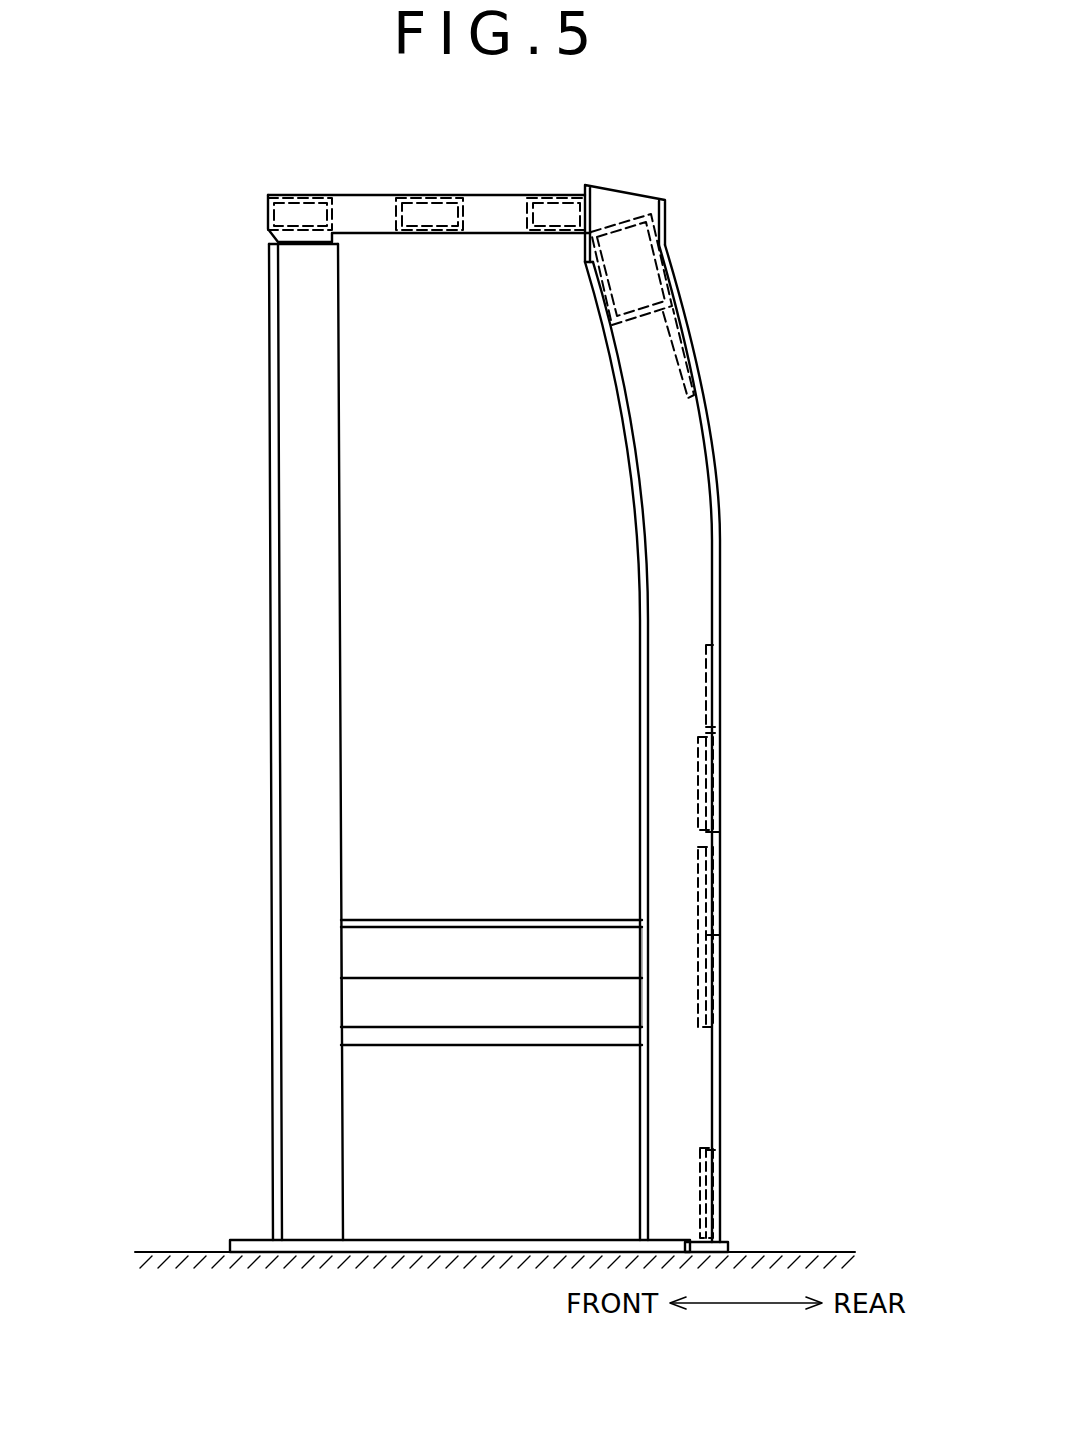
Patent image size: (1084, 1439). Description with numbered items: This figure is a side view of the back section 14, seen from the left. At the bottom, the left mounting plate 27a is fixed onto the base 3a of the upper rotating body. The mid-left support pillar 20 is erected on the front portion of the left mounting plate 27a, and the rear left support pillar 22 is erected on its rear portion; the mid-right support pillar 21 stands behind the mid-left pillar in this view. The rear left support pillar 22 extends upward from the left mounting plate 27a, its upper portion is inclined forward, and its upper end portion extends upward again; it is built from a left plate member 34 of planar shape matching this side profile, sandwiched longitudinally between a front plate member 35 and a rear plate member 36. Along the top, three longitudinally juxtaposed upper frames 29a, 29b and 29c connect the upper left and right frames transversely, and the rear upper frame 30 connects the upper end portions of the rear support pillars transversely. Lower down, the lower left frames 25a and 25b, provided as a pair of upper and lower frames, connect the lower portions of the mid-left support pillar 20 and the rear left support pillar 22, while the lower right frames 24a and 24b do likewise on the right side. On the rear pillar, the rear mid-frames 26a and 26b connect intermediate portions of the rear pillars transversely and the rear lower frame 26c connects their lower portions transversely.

The back section 14 is at (196, 248).
The upper frame 29a is at (299, 195).
The upper frame 29b is at (432, 195).
The upper frame 29c is at (559, 195).
The rear upper frame 30 is at (623, 212).
The rear left support pillar 22 is at (732, 420).
The rear plate member 36 is at (710, 525).
The left plate member 34 is at (692, 598).
The front plate member 35 is at (642, 636).
The mid-right support pillar 21 is at (268, 570).
The mid-left support pillar 20 is at (300, 641).
The rear mid-frame 26a is at (722, 778).
The rear mid-frame 26b is at (722, 890).
The rear lower frame 26c is at (716, 1190).
The lower left frame 25a is at (432, 940).
The lower right frame 24a is at (551, 920).
The lower left frame 25b is at (450, 1003).
The lower right frame 24b is at (563, 1031).
The base 3a is at (190, 1246).
The left mounting plate 27a is at (412, 1262).